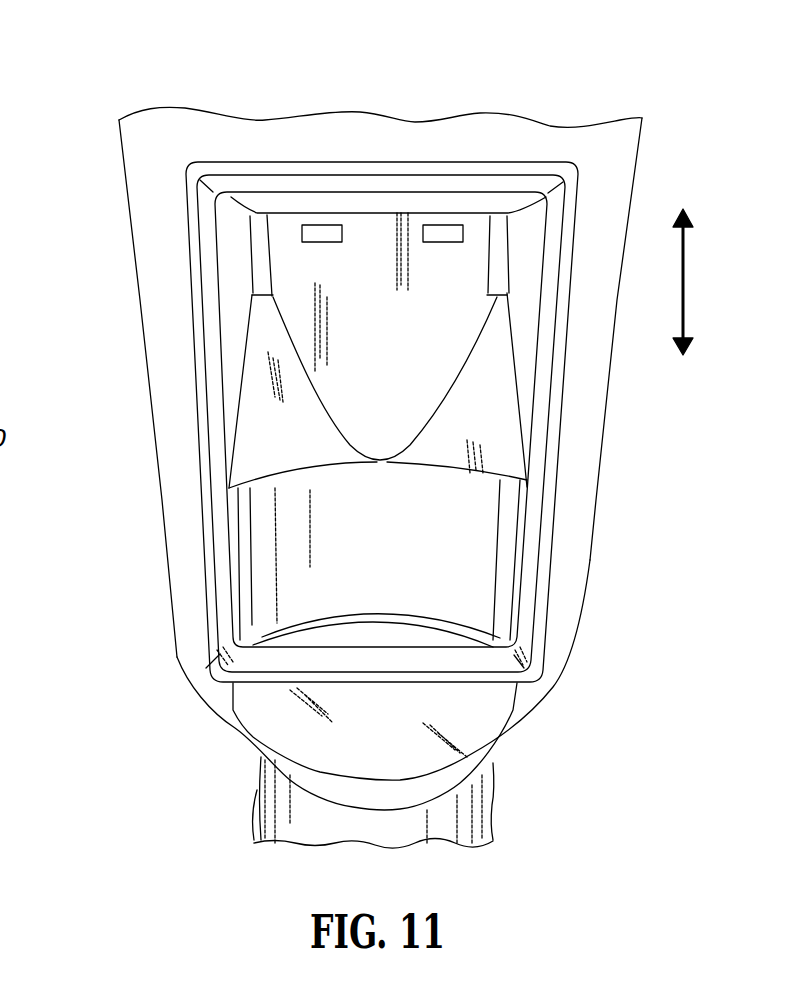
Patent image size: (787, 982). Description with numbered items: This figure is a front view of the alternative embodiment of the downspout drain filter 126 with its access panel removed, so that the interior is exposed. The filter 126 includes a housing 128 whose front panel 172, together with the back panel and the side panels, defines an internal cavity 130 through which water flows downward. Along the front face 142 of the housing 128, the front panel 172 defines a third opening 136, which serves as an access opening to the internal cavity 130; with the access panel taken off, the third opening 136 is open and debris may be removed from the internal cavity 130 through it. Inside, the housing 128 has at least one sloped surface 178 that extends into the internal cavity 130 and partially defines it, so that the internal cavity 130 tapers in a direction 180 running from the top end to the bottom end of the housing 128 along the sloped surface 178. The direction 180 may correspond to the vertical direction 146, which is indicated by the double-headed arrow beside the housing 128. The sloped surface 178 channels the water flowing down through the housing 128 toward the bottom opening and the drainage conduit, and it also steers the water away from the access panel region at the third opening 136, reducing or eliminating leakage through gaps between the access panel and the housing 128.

The filter 126 is at (92, 119).
The housing 128 is at (178, 578).
The internal cavity 130 is at (397, 529).
The third opening 136 is at (300, 663).
The front face 142 is at (460, 708).
The front panel 172 is at (362, 723).
The sloped surface 178 is at (280, 418).
The vertical direction 146 is at (725, 272).
The direction 180 is at (685, 262).